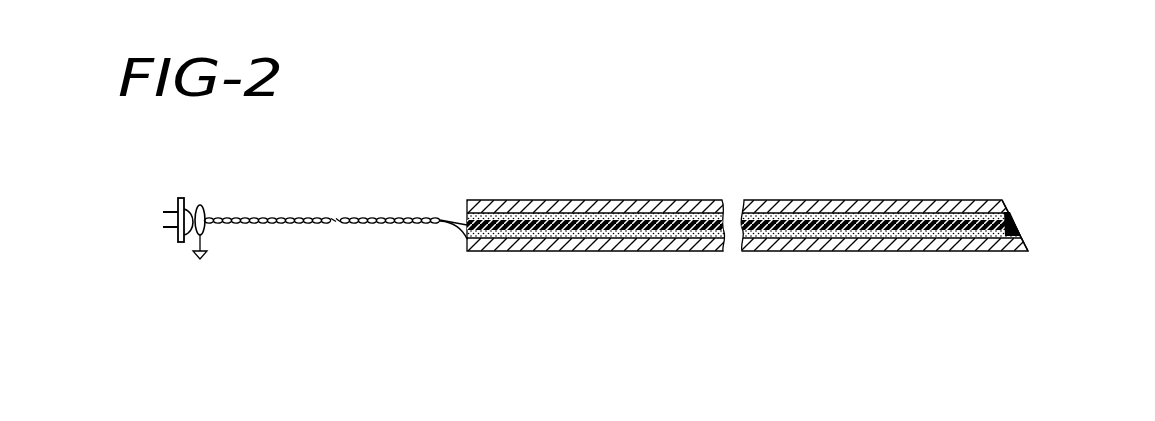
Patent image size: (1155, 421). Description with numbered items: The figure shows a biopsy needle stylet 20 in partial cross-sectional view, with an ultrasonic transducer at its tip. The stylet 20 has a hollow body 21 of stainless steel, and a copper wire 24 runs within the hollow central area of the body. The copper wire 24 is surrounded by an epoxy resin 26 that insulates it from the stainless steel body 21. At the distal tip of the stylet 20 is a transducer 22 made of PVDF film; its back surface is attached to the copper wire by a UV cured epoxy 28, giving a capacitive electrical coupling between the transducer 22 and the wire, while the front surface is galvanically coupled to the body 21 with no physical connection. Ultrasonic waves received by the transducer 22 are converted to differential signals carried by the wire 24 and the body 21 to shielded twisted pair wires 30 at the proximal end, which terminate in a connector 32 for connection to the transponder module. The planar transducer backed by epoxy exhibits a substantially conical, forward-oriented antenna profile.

The stylet 20 is at (753, 183).
The hollow body 21 is at (878, 200).
The transducer 22 is at (1022, 226).
The copper wire 24 is at (813, 229).
The epoxy resin 26 is at (778, 233).
The UV cured epoxy 28 is at (1012, 251).
The shielded twisted pair wires 30 is at (378, 224).
The connector 32 is at (177, 238).